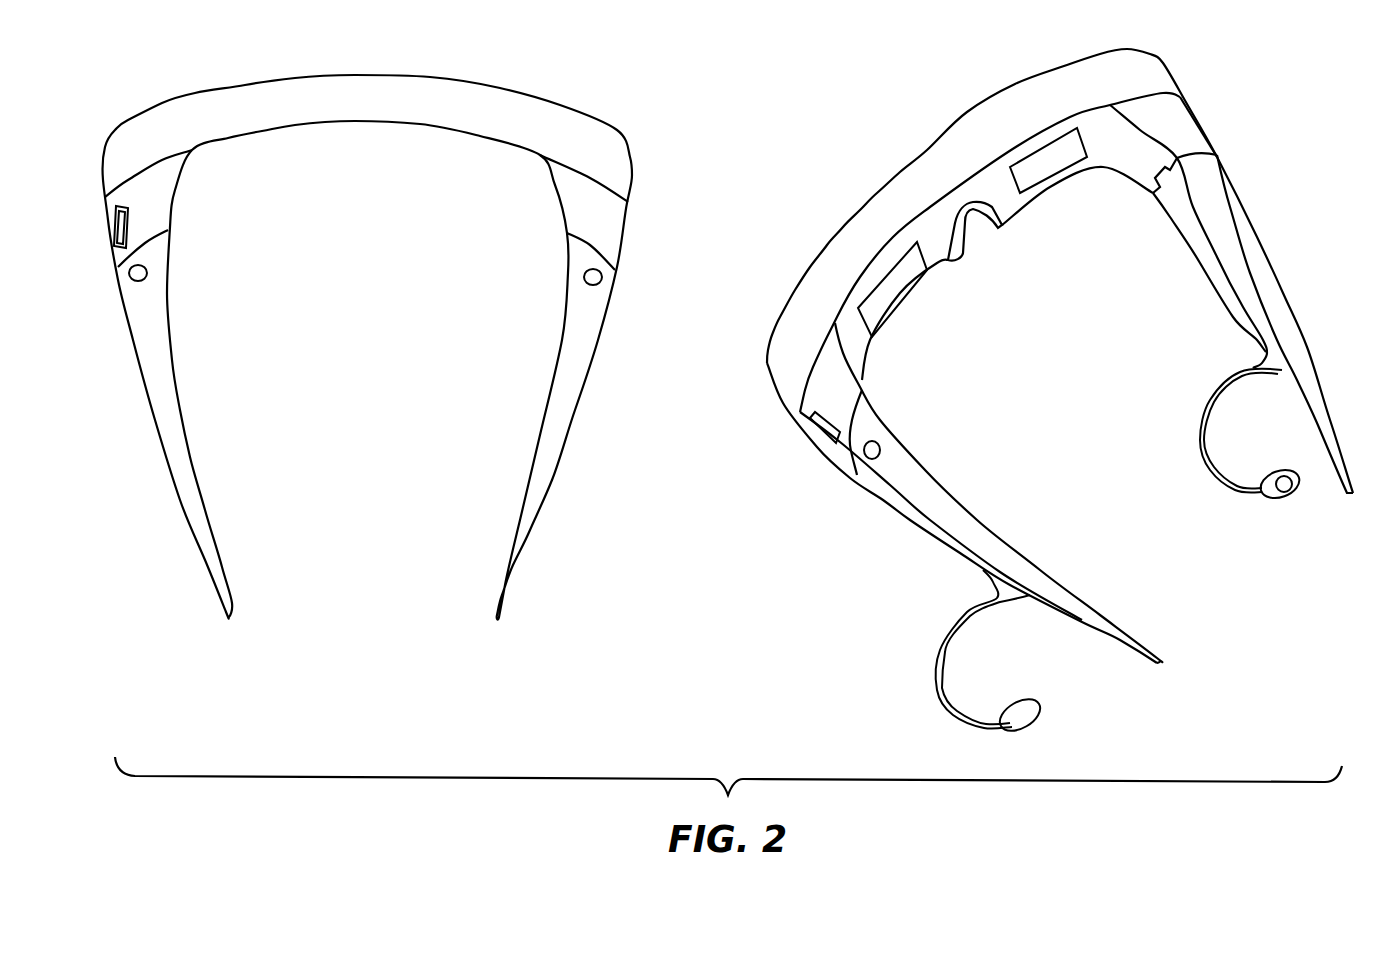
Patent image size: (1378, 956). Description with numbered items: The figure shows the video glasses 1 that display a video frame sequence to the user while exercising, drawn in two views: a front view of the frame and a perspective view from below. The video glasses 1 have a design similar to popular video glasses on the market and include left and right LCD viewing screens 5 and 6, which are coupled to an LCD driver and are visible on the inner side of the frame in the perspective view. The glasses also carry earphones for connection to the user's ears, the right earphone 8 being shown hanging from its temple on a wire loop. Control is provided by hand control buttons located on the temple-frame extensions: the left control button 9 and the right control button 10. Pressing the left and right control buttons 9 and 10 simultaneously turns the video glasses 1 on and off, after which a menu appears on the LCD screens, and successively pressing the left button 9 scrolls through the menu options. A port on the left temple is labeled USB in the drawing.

The video glasses 1 is at (546, 542).
The left LCD viewing screen 5 is at (900, 300).
The right LCD viewing screen 6 is at (1055, 175).
The right earphone 8 is at (1287, 494).
The left control button 9 is at (148, 273).
The right control button 10 is at (585, 276).
The USB port USB is at (128, 222).